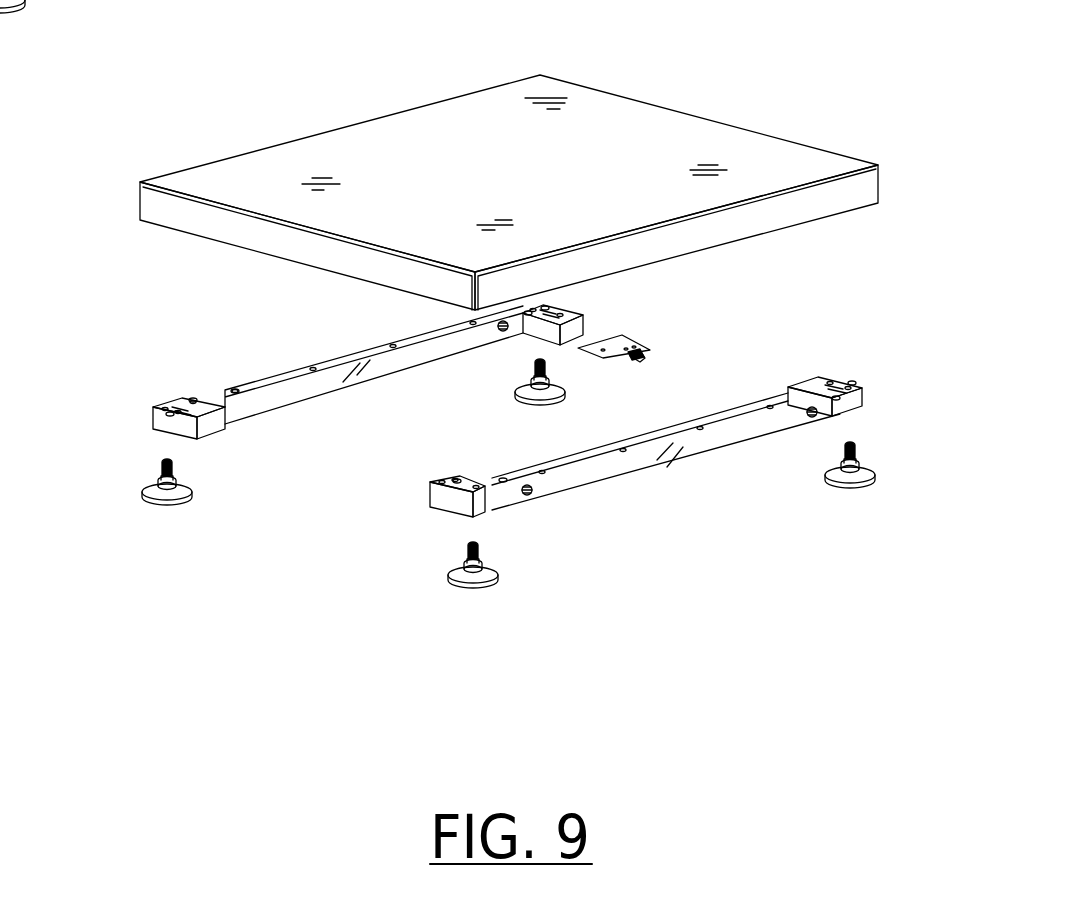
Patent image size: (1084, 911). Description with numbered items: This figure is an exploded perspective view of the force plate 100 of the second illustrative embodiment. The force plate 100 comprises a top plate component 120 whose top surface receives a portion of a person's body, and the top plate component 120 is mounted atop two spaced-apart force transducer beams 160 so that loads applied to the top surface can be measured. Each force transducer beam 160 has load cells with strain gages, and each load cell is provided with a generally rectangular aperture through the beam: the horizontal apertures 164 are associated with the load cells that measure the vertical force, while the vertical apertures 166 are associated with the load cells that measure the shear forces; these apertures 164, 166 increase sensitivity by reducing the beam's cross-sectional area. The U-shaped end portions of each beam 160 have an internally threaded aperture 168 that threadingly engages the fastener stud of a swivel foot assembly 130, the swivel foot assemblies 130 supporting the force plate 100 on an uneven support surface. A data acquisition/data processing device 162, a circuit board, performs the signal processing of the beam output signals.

The force plate 100 is at (286, 575).
The top plate component 120 is at (402, 160).
The swivel foot assembly 130 is at (143, 487).
The force transducer beam 160 is at (250, 394).
The data acquisition/data processing device 162 is at (640, 338).
The horizontal aperture 164 is at (235, 393).
The vertical aperture 166 is at (193, 398).
The internally threaded aperture 168 is at (165, 410).